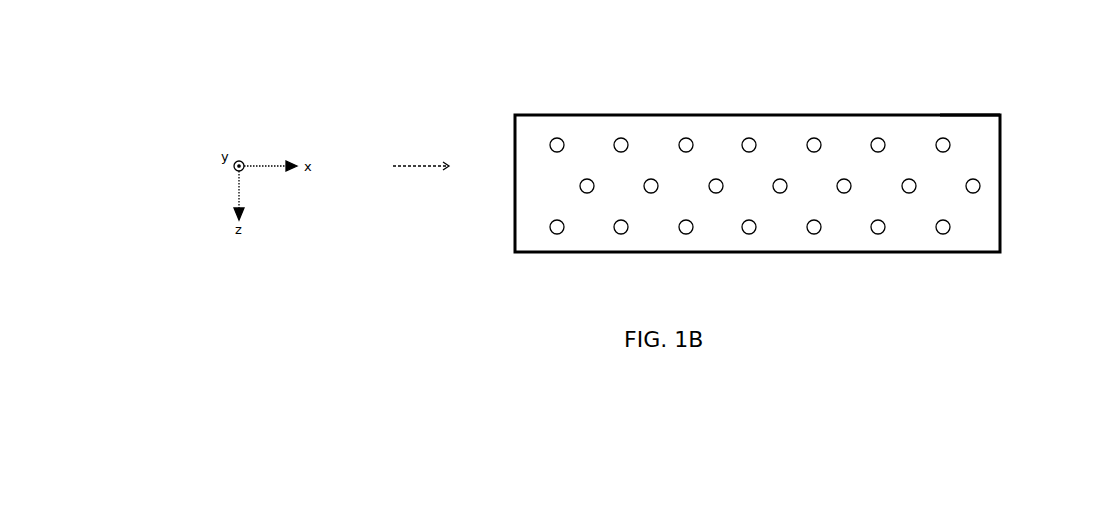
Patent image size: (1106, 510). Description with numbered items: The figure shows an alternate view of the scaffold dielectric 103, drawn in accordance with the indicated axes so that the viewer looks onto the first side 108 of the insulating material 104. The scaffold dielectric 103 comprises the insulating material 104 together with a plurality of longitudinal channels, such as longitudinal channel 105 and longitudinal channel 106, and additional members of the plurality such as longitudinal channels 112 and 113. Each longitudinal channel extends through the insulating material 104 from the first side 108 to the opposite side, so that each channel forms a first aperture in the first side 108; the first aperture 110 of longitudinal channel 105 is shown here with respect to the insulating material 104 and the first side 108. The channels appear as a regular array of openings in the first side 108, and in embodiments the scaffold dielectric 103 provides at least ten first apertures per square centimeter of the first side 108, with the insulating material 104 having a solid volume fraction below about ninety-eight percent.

The scaffold dielectric 103 is at (402, 165).
The insulating material 104 is at (535, 192).
The longitudinal channel 105 is at (548, 229).
The longitudinal channel 106 is at (946, 234).
The first side 108 is at (977, 126).
The first aperture 110 is at (559, 234).
The longitudinal channel 112 is at (689, 138).
The longitudinal channel 113 is at (719, 179).